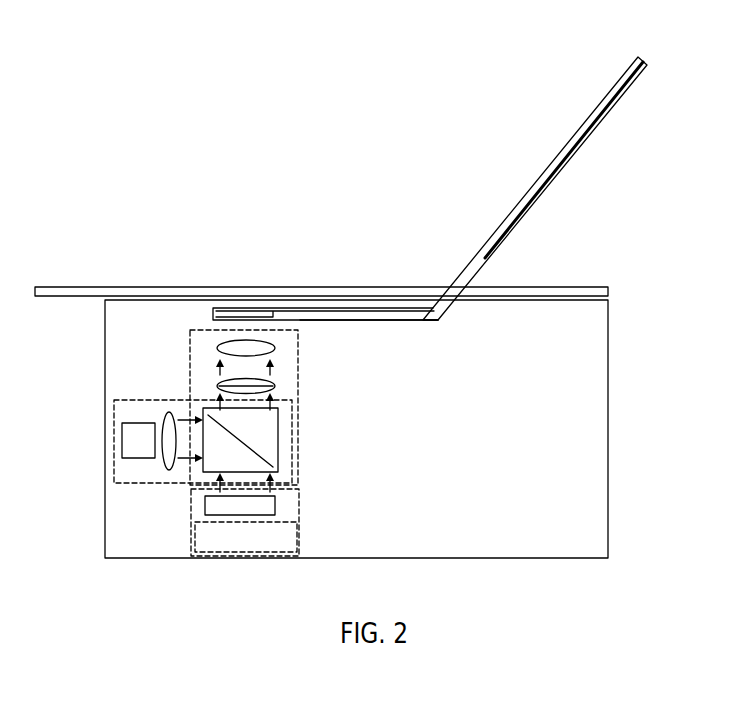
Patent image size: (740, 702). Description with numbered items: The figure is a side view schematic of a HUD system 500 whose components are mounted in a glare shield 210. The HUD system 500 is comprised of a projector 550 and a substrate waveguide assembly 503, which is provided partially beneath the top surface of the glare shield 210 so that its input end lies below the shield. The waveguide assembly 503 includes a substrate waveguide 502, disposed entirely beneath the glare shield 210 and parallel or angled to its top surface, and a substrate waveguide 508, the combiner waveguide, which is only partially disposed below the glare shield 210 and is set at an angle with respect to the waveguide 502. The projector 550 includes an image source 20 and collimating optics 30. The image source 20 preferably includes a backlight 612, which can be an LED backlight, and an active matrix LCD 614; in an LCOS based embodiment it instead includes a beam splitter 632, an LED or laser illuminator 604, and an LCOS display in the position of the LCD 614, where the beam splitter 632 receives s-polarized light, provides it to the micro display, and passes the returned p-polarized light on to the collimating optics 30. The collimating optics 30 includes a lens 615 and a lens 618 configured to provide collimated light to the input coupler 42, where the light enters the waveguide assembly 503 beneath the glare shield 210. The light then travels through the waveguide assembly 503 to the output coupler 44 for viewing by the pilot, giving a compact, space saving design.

The HUD system 500 is at (397, 115).
The substrate waveguide 508 is at (646, 62).
The output coupler 44 is at (605, 115).
The substrate waveguide assembly 503 is at (435, 227).
The glare shield 210 is at (91, 287).
The input coupler 42 is at (273, 320).
The substrate waveguide 502 is at (393, 320).
The collimating optics 30 is at (298, 383).
The lens 618 is at (217, 348).
The lens 615 is at (217, 387).
The beam splitter 632 is at (268, 427).
The active matrix LCD 614 is at (275, 505).
The backlight 612 is at (275, 552).
The LED or laser illuminator 604 is at (163, 483).
The image source 20 is at (124, 517).
The projector 550 is at (364, 472).